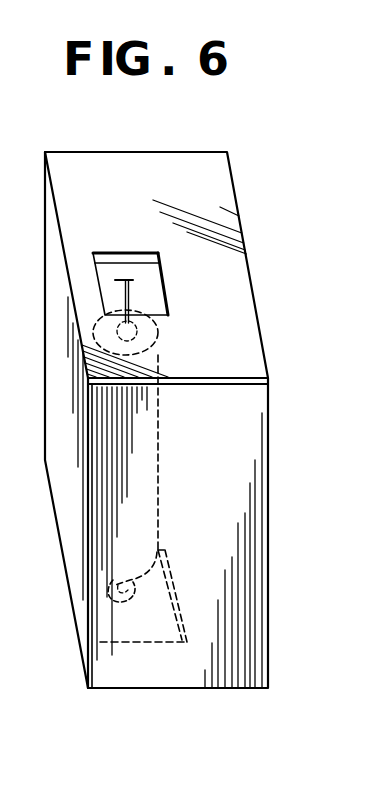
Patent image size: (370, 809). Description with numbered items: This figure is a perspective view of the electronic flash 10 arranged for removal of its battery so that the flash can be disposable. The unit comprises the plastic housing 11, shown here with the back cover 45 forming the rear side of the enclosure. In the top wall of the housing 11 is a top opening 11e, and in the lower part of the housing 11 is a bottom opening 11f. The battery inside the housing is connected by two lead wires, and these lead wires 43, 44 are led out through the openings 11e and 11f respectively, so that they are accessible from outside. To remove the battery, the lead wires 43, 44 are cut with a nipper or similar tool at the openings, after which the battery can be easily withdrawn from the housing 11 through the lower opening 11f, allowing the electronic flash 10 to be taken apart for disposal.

The electronic flash 10 is at (238, 170).
The housing 11 is at (245, 257).
The top opening 11e is at (127, 252).
The bottom opening 11f is at (173, 590).
The lead wire 43 is at (130, 297).
The lead wire 44 is at (100, 600).
The back cover 45 is at (260, 487).